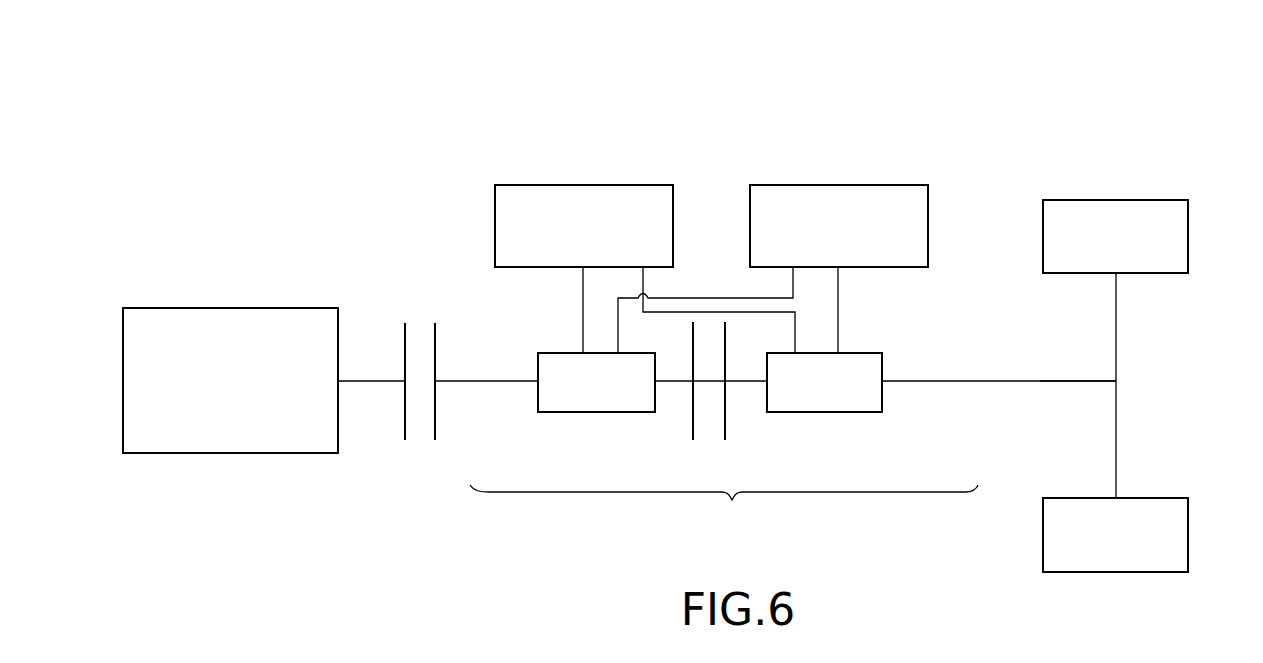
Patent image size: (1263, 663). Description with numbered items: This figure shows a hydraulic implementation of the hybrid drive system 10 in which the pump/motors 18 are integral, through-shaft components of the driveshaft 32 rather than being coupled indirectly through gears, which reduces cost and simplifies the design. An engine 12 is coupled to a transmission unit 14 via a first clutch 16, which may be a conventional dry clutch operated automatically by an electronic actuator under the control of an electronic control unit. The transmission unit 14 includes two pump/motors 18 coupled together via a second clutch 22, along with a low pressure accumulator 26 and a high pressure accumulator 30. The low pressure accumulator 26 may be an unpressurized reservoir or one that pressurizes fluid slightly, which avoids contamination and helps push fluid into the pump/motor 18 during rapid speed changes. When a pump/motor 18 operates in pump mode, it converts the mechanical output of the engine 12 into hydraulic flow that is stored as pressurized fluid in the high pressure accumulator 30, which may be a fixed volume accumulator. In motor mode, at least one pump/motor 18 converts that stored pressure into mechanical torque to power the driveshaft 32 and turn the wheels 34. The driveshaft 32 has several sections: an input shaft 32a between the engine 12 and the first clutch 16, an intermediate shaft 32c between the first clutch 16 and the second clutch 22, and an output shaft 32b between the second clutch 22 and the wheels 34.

The system 10 is at (1098, 142).
The engine 12 is at (240, 453).
The transmission unit 14 is at (731, 502).
The first clutch 16 is at (418, 328).
The pump/motor 18 is at (625, 412).
The second clutch 22 is at (707, 432).
The low pressure accumulator 26 is at (928, 225).
The high pressure accumulator 30 is at (495, 226).
The driveshaft 32 is at (998, 383).
The input shaft 32a is at (366, 382).
The output shaft 32b is at (1060, 382).
The intermediate shaft 32c is at (497, 378).
The wheels 34 is at (1188, 222).